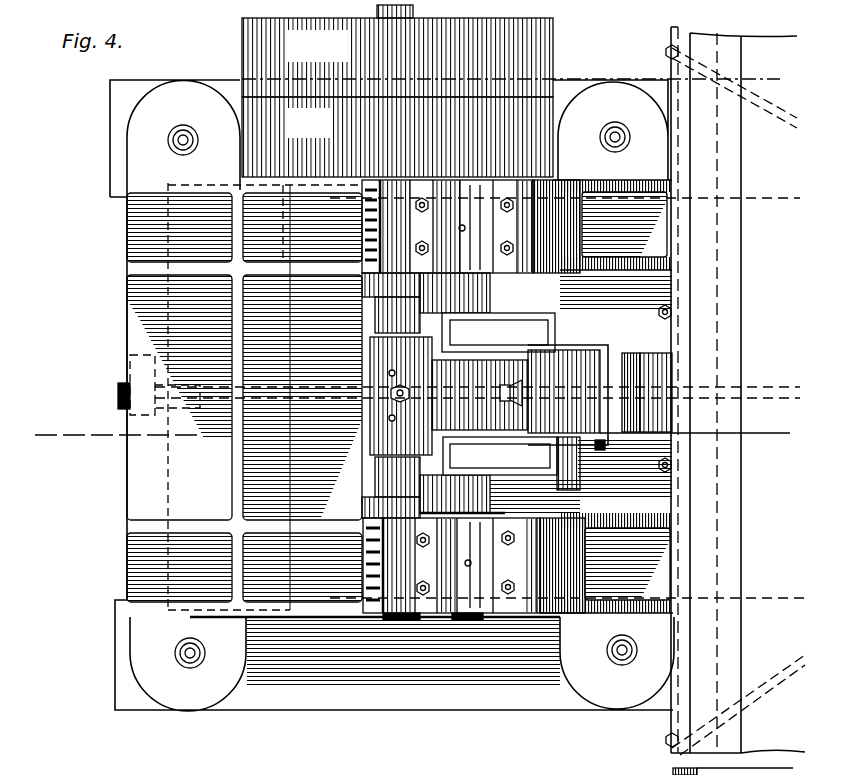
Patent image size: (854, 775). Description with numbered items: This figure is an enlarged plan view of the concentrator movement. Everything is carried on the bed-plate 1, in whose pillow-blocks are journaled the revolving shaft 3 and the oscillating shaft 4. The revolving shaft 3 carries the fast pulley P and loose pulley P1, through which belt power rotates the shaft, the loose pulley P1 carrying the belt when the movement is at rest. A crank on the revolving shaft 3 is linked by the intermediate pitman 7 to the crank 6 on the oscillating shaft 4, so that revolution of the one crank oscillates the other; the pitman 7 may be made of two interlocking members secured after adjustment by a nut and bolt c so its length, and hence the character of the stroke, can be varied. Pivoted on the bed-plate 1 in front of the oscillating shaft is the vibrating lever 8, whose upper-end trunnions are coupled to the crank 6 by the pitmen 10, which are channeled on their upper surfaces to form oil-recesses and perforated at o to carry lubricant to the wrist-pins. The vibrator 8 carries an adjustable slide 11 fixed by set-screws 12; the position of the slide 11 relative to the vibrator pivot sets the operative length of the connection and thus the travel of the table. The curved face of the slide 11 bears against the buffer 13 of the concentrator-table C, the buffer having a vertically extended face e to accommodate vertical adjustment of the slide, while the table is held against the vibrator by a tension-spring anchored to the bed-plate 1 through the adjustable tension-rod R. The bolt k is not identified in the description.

The bed-plate 1 is at (140, 325).
The revolving shaft 3 is at (386, 302).
The oscillating shaft 4 is at (470, 618).
The crank 6 is at (401, 404).
The intermediate pitman 7 is at (386, 345).
The vibrating lever 8 is at (581, 393).
The pitmen 10 is at (499, 394).
The adjustable slide 11 is at (590, 342).
The set-screws 12 is at (604, 447).
The buffer 13 is at (656, 376).
The fast pulley P is at (397, 137).
The loose pulley P1 is at (397, 51).
The bolt strip k is at (560, 190).
The nut and bolt c is at (391, 392).
The perforations o is at (389, 418).
The vertically extended face e is at (634, 352).
The concentrator-table C is at (732, 401).
The adjustable tension-rod R is at (766, 389).